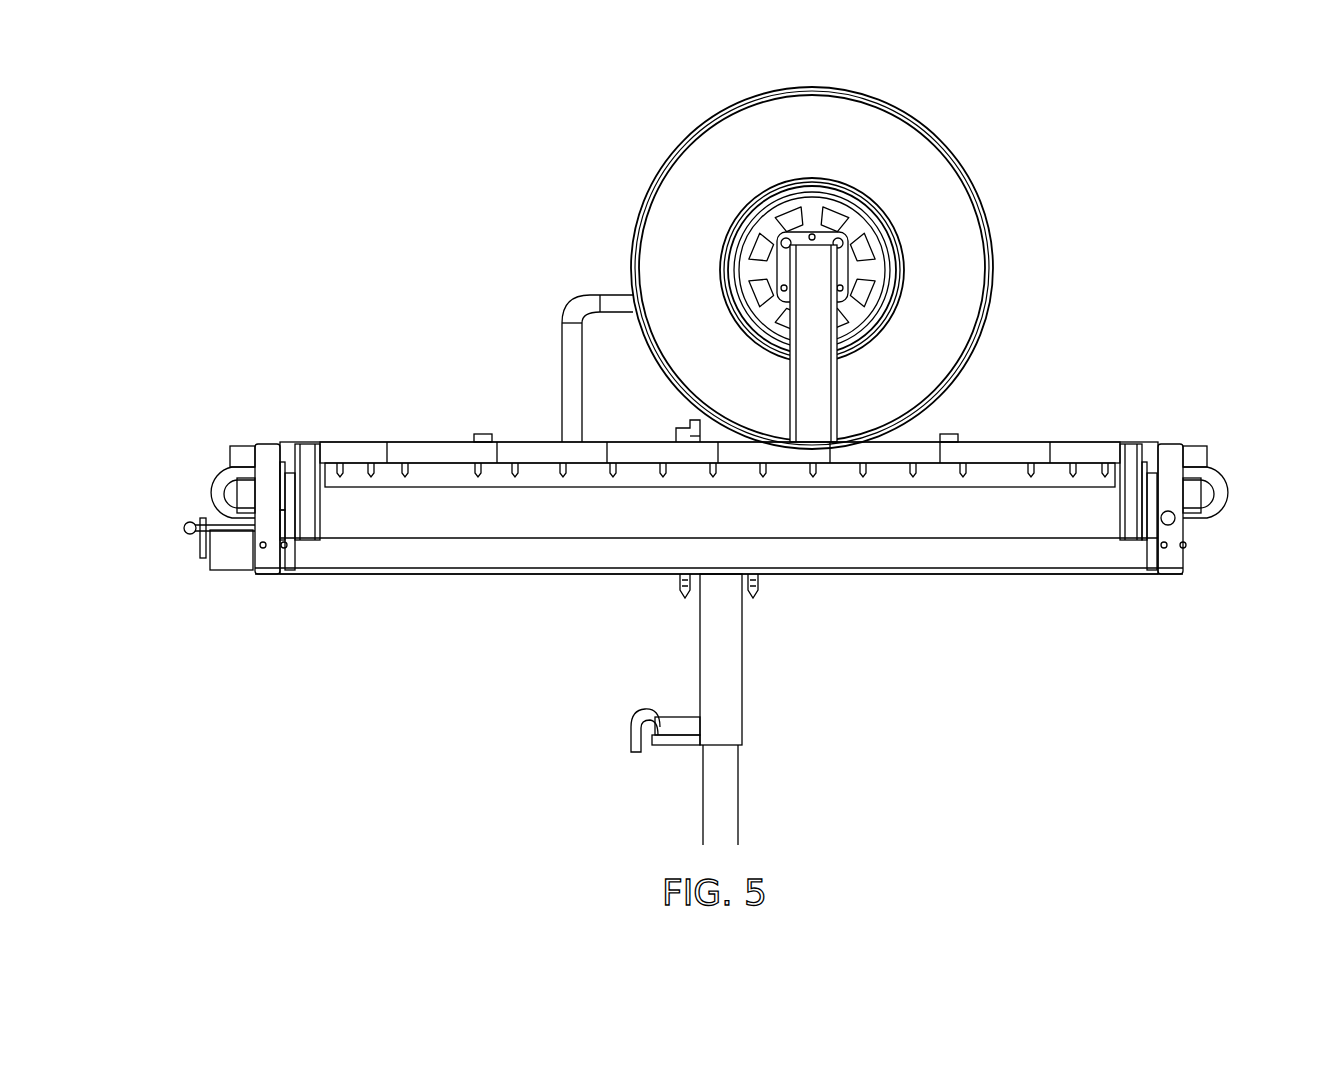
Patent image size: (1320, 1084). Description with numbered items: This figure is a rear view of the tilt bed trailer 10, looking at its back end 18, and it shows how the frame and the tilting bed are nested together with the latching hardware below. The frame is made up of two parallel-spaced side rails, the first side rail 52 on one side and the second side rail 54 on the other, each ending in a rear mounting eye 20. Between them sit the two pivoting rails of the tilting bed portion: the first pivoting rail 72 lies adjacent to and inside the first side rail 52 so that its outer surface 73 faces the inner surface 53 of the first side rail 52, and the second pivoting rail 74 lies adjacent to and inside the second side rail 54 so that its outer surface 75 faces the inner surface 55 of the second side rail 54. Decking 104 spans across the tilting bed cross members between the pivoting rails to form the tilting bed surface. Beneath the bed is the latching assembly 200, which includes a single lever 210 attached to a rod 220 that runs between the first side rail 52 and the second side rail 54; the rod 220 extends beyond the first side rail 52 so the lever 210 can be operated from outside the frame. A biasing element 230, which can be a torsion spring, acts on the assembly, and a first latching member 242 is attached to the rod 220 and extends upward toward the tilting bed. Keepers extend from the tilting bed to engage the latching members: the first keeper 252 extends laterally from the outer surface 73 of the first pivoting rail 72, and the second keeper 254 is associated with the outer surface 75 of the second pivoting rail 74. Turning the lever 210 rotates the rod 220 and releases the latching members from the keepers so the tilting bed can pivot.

The tilt bed trailer 10 is at (1112, 285).
The back end 18 is at (1063, 517).
The right mounting eye 20 is at (1192, 557).
The first side rail 52 is at (255, 513).
The inner surface 53 is at (273, 472).
The second side rail 54 is at (1180, 517).
The inner surface 55 is at (1172, 516).
The first pivoting rail 72 is at (305, 468).
The outer surface 73 is at (297, 508).
The second pivoting rail 74 is at (1128, 460).
The outer surface 75 is at (1165, 477).
The decking 104 is at (1085, 452).
The latching assembly 200 is at (172, 512).
The single lever 210 is at (185, 532).
The rod 220 is at (915, 558).
The biasing element 230 is at (227, 565).
The first latching member 242 is at (297, 517).
The first keeper 252 is at (283, 478).
The keeper 254 is at (1163, 510).